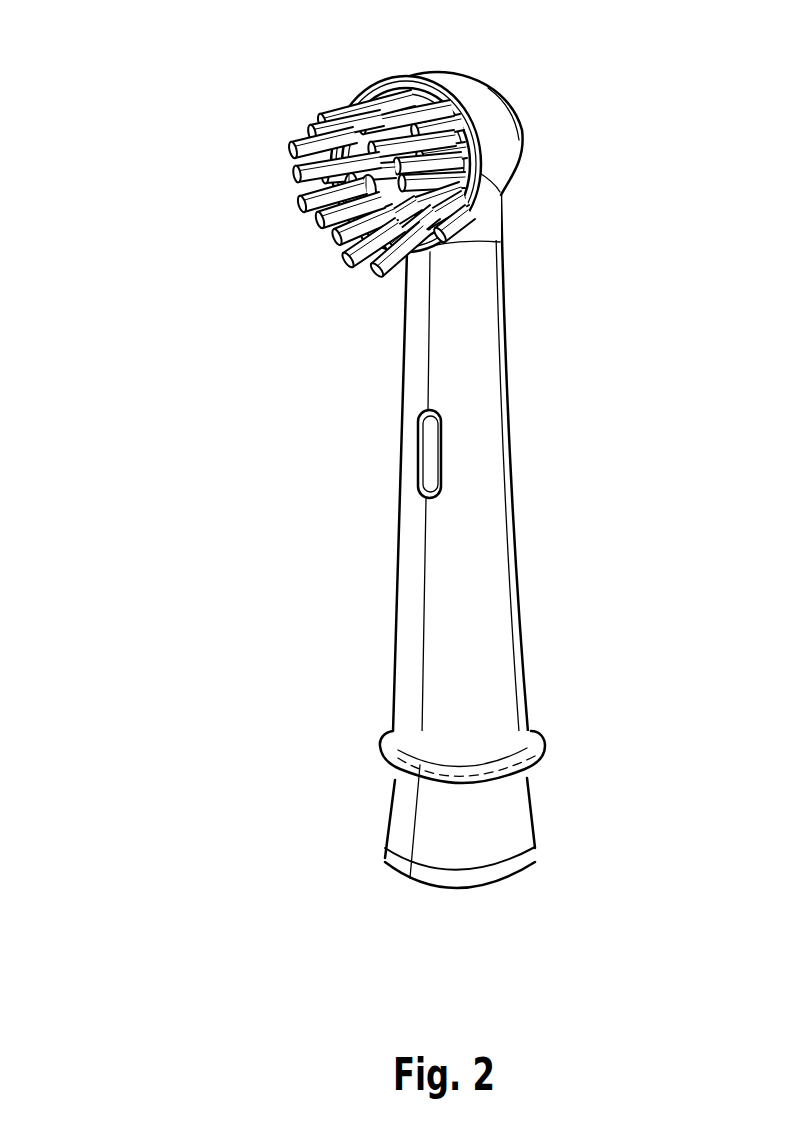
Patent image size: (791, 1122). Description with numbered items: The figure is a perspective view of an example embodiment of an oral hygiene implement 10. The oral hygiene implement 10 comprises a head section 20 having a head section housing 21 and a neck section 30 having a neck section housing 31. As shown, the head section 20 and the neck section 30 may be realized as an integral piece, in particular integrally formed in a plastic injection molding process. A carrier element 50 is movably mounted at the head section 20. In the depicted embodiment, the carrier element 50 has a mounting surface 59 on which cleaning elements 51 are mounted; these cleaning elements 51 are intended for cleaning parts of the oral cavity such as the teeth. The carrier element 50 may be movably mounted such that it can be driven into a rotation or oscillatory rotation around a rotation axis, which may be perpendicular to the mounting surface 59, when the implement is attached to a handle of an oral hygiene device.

The oral hygiene implement 10 is at (179, 91).
The head section 20 is at (541, 92).
The head section housing 21 is at (512, 147).
The neck section 30 is at (531, 539).
The neck section housing 31 is at (504, 612).
The carrier element 50 is at (363, 100).
The cleaning elements 51 is at (336, 234).
The mounting surface 59 is at (441, 112).